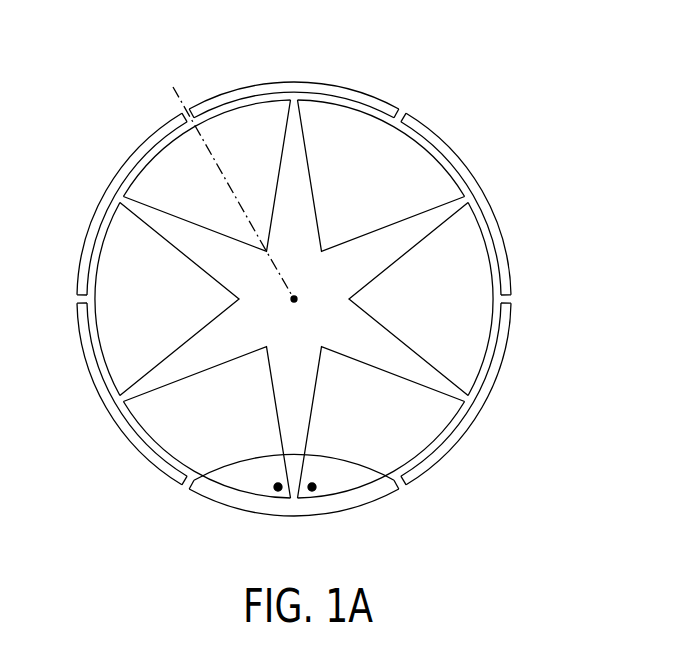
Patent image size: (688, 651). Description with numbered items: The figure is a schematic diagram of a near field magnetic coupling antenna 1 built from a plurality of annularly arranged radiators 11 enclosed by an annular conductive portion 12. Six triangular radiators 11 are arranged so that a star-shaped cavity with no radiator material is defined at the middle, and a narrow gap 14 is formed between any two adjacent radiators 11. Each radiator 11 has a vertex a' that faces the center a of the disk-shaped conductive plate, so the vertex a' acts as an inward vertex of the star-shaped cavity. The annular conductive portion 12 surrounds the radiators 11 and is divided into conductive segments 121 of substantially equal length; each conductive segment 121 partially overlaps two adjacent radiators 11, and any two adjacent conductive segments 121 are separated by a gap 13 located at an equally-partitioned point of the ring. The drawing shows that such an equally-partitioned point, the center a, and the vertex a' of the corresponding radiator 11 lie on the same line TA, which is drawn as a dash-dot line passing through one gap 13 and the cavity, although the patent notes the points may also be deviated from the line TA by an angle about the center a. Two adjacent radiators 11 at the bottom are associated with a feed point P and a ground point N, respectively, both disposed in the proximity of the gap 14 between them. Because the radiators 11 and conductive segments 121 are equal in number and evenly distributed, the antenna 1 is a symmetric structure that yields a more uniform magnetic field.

The near field magnetic coupling antenna 1 is at (511, 43).
The radiator 11 is at (247, 170).
The annular conductive portion 12 is at (354, 299).
The conductive segment 121 is at (503, 268).
The gap 13 is at (188, 108).
The gap 14 is at (295, 103).
The line TA is at (177, 105).
The center a is at (300, 300).
The vertex a' is at (284, 245).
The feed point P is at (269, 476).
The ground point N is at (322, 476).